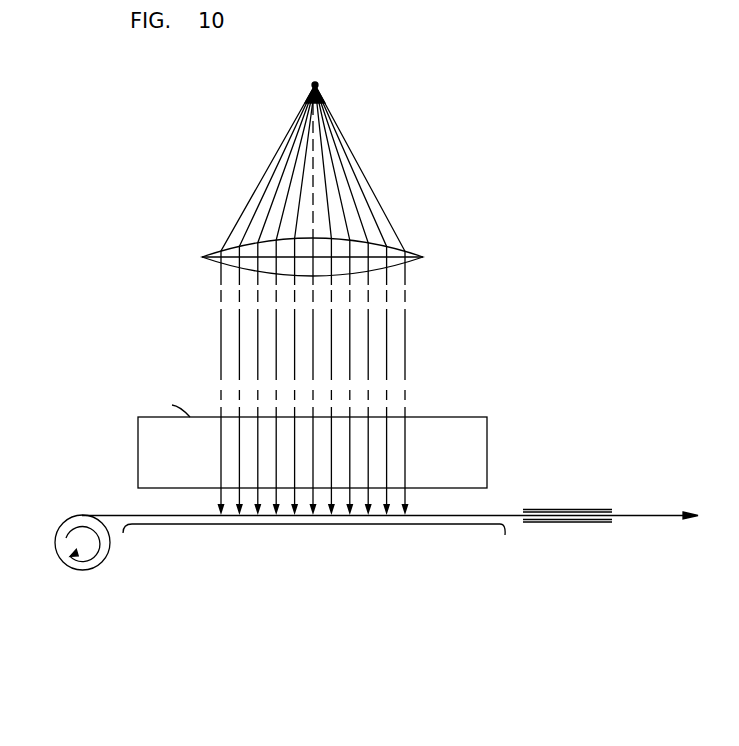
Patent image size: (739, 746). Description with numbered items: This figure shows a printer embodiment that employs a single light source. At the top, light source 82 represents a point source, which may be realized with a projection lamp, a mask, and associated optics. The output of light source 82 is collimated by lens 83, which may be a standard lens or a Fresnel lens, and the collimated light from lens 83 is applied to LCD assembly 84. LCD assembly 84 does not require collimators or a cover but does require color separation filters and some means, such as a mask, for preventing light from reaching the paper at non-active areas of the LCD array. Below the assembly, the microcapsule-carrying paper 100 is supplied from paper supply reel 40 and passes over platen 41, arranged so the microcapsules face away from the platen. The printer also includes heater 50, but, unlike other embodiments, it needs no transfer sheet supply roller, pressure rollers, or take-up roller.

The light source 82 is at (318, 83).
The lens 83 is at (417, 253).
The LCD assembly 84 is at (468, 417).
The paper 100 is at (505, 515).
The platen 41 is at (452, 524).
The paper supply reel 40 is at (97, 555).
The heater 50 is at (592, 496).